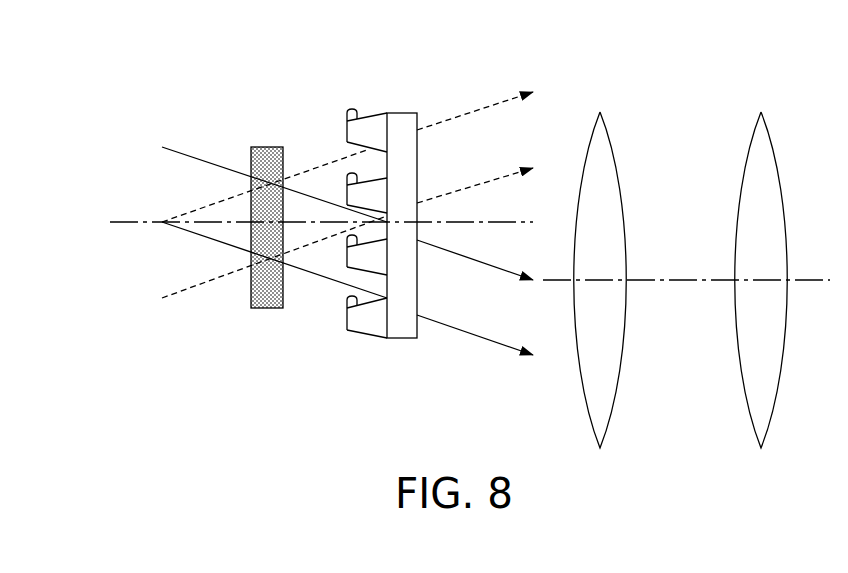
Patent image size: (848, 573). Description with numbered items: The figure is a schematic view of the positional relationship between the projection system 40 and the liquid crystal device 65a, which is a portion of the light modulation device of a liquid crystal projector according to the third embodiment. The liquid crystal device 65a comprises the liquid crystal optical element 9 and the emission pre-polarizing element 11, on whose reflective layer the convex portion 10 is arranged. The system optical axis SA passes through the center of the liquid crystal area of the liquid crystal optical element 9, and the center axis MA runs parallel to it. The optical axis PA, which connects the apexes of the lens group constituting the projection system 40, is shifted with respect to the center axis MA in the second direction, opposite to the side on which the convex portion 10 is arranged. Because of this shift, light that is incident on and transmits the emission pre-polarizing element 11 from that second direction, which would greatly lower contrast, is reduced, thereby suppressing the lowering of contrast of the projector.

The liquid crystal optical element 9 is at (275, 147).
The convex portion 10 is at (345, 108).
The emission pre-polarizing element 11 is at (403, 113).
The liquid crystal device 65a is at (417, 60).
The projection system 40 is at (797, 60).
The system optical axis SA is at (140, 222).
The center axis MA is at (205, 222).
The optical axis PA is at (817, 280).